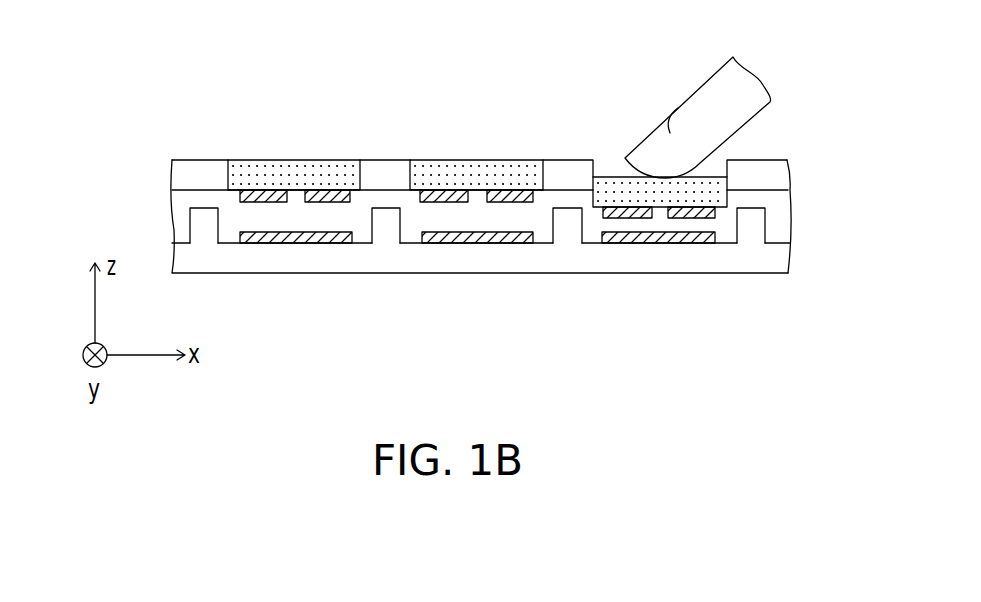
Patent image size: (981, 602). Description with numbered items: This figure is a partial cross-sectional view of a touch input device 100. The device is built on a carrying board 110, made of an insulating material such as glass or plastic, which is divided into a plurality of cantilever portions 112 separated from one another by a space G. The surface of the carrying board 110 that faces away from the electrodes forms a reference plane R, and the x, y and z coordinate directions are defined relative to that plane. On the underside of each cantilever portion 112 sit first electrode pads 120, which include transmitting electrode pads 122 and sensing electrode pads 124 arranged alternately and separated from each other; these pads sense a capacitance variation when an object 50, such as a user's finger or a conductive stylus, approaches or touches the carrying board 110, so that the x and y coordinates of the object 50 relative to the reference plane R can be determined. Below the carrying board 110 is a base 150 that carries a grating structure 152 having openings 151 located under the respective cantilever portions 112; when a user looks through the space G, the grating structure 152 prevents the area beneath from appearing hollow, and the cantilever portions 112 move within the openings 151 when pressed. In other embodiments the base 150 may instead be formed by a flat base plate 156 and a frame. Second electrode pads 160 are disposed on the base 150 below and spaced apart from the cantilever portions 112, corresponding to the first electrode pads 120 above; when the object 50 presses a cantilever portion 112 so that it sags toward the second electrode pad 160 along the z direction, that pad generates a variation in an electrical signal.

The touch input device 100 is at (788, 333).
The carrying board 110 is at (150, 180).
The cantilever portions 112 is at (297, 175).
The first electrode pads 120 is at (470, 140).
The transmitting electrode pads 122 is at (258, 192).
The sensing electrode pads 124 is at (328, 195).
The base 150 is at (340, 257).
The openings 151 is at (230, 220).
The grating structure 152 is at (388, 222).
The flat base plate 156 is at (473, 257).
The second electrode pads 160 is at (277, 243).
The object 50 is at (675, 137).
The space G is at (384, 166).
The reference plane R is at (527, 152).